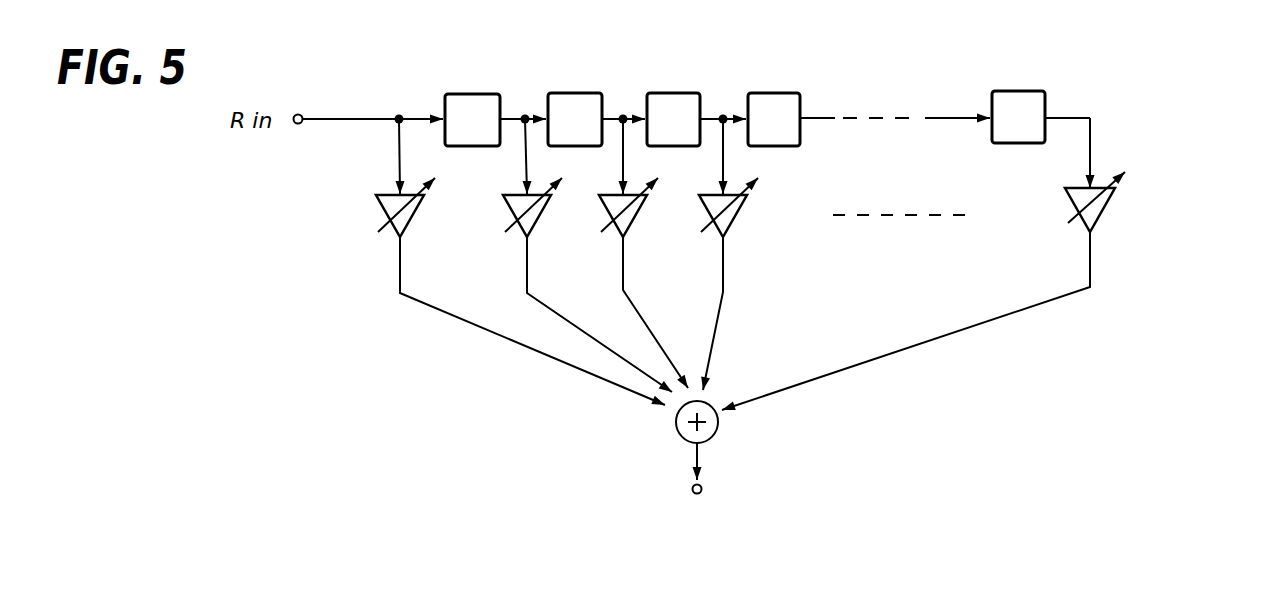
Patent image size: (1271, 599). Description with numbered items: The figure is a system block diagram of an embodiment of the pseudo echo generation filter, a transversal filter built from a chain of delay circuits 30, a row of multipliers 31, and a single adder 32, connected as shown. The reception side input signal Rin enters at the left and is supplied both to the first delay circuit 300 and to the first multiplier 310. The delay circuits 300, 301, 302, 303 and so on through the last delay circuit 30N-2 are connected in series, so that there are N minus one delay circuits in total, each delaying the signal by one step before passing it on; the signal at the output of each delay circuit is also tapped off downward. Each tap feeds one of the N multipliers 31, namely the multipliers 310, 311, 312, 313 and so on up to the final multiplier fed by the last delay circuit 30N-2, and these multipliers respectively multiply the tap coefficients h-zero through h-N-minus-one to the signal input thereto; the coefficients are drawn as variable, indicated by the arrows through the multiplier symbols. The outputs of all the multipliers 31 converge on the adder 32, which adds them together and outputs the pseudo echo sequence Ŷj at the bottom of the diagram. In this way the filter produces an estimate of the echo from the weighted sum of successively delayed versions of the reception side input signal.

The delay circuits 30 is at (750, 95).
The delay circuit 300 is at (473, 93).
The delay circuit 301 is at (570, 93).
The delay circuit 302 is at (672, 93).
The delay circuit 303 is at (766, 93).
The delay circuit 30N-2 is at (1012, 90).
The multipliers 31 is at (726, 264).
The multiplier 310 is at (378, 232).
The multiplier 311 is at (505, 232).
The multiplier 312 is at (601, 232).
The multiplier 313 is at (708, 254).
The adder 32 is at (712, 403).